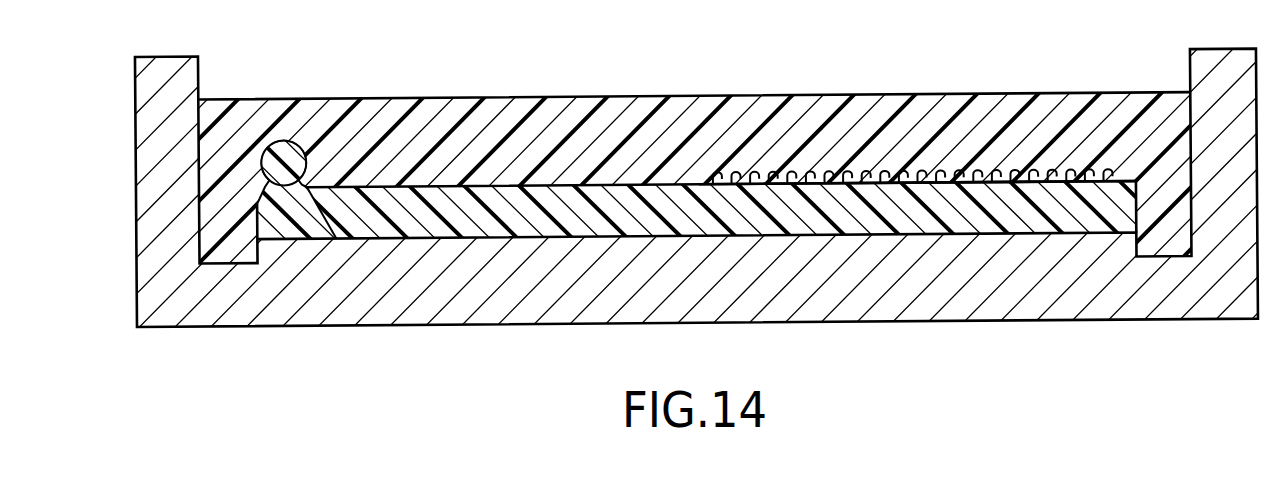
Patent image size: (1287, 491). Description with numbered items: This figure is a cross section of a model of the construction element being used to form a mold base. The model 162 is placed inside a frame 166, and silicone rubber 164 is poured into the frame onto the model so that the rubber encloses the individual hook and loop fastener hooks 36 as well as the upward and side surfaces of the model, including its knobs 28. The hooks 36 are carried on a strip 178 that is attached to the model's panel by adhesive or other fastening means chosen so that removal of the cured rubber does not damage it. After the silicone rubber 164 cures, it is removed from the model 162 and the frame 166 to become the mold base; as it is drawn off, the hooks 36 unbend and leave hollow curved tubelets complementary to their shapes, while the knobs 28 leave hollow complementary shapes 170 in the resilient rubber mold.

The knobs 28 is at (291, 154).
The hook and loop fastener hooks 36 is at (780, 176).
The model 162 is at (488, 218).
The silicone rubber 164 is at (657, 107).
The frame 166 is at (155, 290).
The hollow complementary shapes 170 is at (332, 144).
The strip 178 is at (1065, 168).